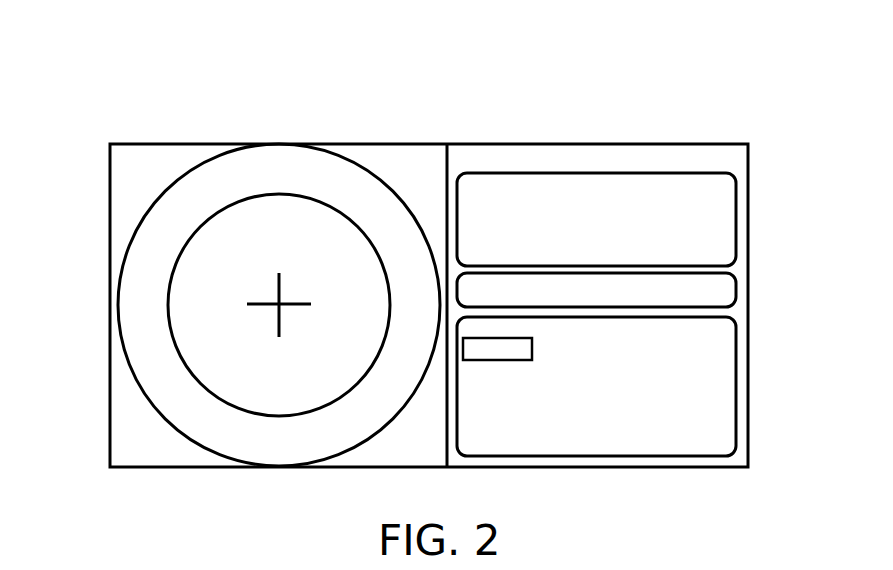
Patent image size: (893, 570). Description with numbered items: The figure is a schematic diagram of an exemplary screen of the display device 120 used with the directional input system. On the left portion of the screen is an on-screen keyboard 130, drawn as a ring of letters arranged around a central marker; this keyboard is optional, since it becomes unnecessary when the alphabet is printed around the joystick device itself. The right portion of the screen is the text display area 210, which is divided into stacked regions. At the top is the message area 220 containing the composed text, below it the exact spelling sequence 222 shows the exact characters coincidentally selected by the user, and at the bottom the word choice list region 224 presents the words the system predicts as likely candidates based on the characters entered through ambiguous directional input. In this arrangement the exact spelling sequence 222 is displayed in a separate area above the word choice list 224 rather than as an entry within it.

The display device 120 is at (248, 118).
The on-screen keyboard 130 is at (138, 256).
The text display area 210 is at (732, 161).
The message area 220 is at (695, 210).
The exact spelling sequence 222 is at (695, 286).
The word choice list region 224 is at (695, 440).